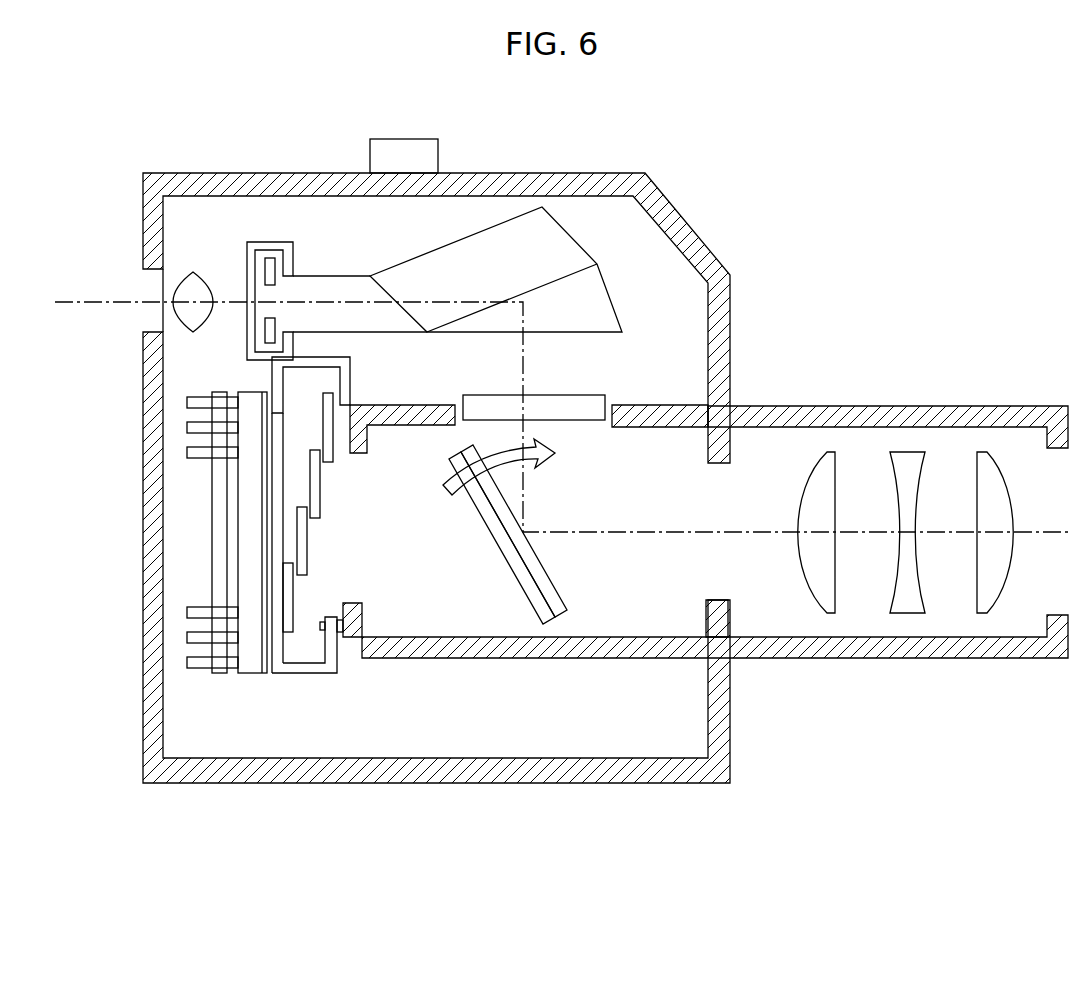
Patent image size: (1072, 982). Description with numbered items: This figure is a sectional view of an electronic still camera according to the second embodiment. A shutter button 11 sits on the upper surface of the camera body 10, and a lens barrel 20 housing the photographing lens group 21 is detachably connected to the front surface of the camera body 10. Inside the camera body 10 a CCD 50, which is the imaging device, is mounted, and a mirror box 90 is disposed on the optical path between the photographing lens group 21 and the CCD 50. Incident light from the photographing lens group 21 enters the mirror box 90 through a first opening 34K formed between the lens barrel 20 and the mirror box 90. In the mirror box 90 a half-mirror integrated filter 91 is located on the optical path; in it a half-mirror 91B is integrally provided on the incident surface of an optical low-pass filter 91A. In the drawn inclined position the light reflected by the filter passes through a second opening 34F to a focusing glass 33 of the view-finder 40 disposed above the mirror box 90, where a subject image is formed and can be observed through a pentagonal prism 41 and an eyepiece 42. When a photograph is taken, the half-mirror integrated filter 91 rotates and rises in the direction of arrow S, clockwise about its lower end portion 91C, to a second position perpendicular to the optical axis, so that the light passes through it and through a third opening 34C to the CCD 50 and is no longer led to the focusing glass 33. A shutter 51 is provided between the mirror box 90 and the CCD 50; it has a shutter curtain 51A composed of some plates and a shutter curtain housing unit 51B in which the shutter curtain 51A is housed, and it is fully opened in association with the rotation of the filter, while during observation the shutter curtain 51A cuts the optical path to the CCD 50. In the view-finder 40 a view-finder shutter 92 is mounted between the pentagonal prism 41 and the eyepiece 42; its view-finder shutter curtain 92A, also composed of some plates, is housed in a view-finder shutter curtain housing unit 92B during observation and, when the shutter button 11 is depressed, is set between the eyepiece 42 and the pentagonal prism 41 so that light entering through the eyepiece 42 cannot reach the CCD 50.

The camera body 10 is at (175, 788).
The shutter button 11 is at (404, 139).
The lens barrel 20 is at (715, 552).
The photographing lens group 21 is at (945, 442).
The focusing glass 33 is at (567, 395).
The third opening 34C is at (352, 603).
The second opening 34F is at (600, 427).
The first opening 34K is at (713, 600).
The view-finder 40 is at (479, 233).
The pentagonal prism 41 is at (612, 300).
The eyepiece 42 is at (225, 272).
The CCD 50 is at (248, 392).
The shutter 51 is at (347, 548).
The shutter curtain 51A is at (333, 394).
The shutter curtain housing unit 51B is at (350, 360).
The mirror box 90 is at (678, 662).
The half-mirror integrated filter 91 is at (512, 574).
The optical low-pass filter 91A is at (516, 586).
The half-mirror 91B is at (549, 568).
The lower end portion 91C is at (553, 626).
The view-finder shutter 92 is at (290, 247).
The view-finder shutter curtain 92A is at (286, 272).
The view-finder shutter curtain housing unit 92B is at (272, 242).
The arrow S is at (553, 451).